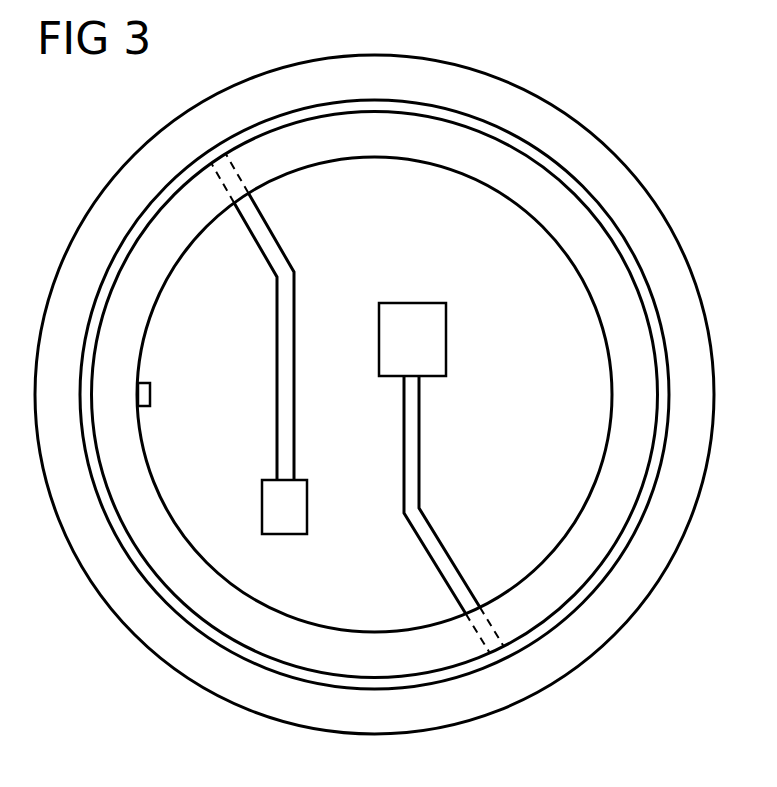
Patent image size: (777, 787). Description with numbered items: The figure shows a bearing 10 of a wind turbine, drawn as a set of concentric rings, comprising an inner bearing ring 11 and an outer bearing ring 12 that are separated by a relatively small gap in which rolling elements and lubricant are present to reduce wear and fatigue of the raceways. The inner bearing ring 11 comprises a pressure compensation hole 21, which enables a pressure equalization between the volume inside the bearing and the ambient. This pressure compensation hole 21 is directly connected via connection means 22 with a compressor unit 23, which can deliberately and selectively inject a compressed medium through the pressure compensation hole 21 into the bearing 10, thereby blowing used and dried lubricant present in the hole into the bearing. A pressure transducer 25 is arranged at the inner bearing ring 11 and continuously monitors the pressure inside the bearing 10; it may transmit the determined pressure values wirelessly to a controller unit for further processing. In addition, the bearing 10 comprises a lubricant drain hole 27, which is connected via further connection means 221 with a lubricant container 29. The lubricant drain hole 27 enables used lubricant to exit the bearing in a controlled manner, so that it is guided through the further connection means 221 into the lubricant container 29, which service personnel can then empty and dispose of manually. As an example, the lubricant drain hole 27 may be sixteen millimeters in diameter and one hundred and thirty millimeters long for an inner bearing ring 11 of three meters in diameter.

The bearing 10 is at (640, 93).
The inner bearing ring 11 is at (381, 143).
The outer bearing ring 12 is at (640, 205).
The pressure compensation hole 21 is at (497, 650).
The connection means 22 is at (410, 472).
The further connection means 221 is at (285, 418).
The compressor unit 23 is at (446, 338).
The pressure transducer 25 is at (150, 394).
The lubricant drain hole 27 is at (224, 176).
The lubricant container 29 is at (307, 505).